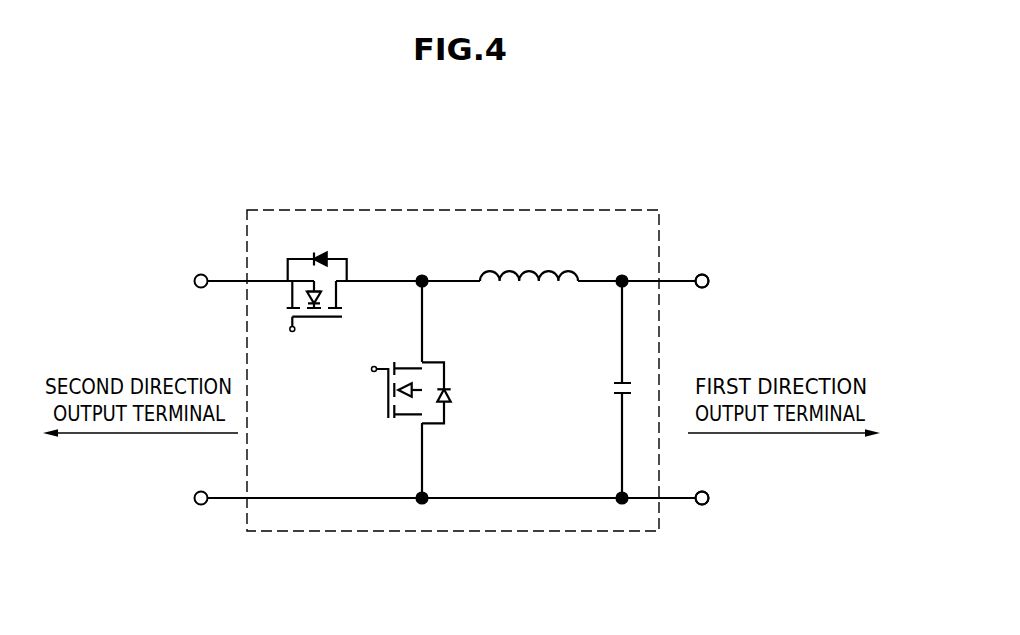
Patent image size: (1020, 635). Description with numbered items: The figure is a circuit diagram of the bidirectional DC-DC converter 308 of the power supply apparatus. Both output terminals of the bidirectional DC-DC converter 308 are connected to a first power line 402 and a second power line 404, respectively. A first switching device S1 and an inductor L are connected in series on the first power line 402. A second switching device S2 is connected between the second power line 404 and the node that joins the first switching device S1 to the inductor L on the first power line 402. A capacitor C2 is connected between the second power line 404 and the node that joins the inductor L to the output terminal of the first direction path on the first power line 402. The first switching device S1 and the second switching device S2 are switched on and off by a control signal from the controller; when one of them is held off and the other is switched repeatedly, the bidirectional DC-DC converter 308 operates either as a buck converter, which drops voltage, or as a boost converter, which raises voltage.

The bidirectional DC-DC converter 308 is at (488, 210).
The first power line 402 is at (676, 281).
The second power line 404 is at (677, 502).
The first switching device S1 is at (317, 277).
The second switching device S2 is at (430, 392).
The inductor L is at (529, 261).
The capacitor C2 is at (610, 388).